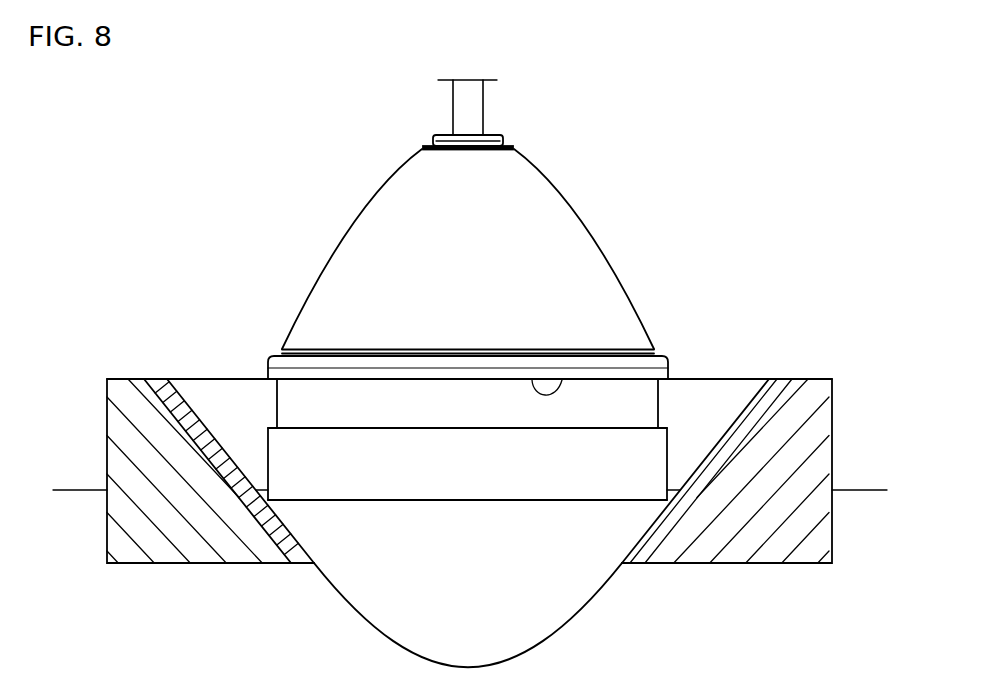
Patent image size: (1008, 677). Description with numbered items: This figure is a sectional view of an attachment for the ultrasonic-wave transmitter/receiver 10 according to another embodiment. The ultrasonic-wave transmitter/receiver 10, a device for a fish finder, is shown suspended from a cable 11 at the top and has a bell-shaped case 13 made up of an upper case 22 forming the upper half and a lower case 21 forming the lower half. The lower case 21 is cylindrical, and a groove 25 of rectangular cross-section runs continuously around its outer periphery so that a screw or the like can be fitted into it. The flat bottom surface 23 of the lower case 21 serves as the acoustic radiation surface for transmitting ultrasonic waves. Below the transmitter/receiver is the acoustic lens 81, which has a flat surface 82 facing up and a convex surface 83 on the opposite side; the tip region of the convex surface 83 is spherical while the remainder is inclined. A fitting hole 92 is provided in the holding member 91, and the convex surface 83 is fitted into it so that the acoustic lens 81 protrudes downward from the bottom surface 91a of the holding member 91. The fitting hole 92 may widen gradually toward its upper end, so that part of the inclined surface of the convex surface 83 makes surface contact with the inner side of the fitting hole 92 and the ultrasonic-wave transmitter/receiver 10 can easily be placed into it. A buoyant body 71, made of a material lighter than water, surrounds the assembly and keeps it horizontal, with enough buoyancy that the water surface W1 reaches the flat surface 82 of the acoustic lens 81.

The ultrasonic-wave transmitter/receiver 10 is at (469, 254).
The cable 11 is at (462, 112).
The case 13 is at (574, 229).
The upper case 22 is at (343, 248).
The groove 25 is at (562, 380).
The lower case 21 is at (467, 476).
The bottom surface 23 is at (398, 513).
The flat surface 82 is at (567, 487).
The buoyant body 71 is at (128, 435).
The fitting hole 92 is at (200, 418).
The holding member 91 is at (748, 406).
The bottom surface 91a is at (301, 576).
The acoustic lens 81 is at (371, 603).
The convex surface 83 is at (583, 627).
The water surface W1 is at (860, 489).